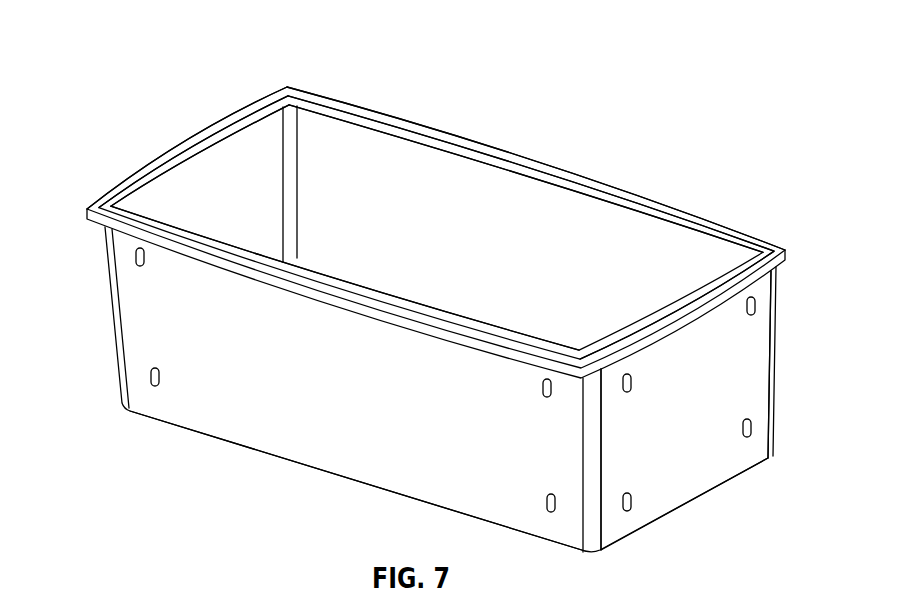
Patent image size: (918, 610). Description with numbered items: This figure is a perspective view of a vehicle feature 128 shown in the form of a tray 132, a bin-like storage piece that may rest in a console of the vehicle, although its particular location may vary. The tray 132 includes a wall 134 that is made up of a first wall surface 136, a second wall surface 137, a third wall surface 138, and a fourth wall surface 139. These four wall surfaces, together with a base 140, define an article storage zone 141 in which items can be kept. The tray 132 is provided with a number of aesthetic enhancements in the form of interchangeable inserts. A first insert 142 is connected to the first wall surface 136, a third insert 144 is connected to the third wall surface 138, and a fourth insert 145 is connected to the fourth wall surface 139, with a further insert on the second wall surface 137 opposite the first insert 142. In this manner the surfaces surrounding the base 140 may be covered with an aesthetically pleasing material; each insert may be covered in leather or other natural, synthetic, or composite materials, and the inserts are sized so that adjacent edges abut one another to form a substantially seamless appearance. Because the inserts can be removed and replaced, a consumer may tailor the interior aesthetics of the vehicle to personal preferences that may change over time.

The vehicle feature 128 is at (601, 180).
The tray 132 is at (173, 139).
The wall 134 is at (450, 140).
The first wall surface 136 is at (257, 137).
The second wall surface 137 is at (700, 380).
The third wall surface 138 is at (243, 427).
The fourth wall surface 139 is at (393, 163).
The base 140 is at (293, 461).
The article storage zone 141 is at (189, 212).
The first insert 142 is at (255, 172).
The third insert 144 is at (385, 291).
The fourth insert 145 is at (530, 221).